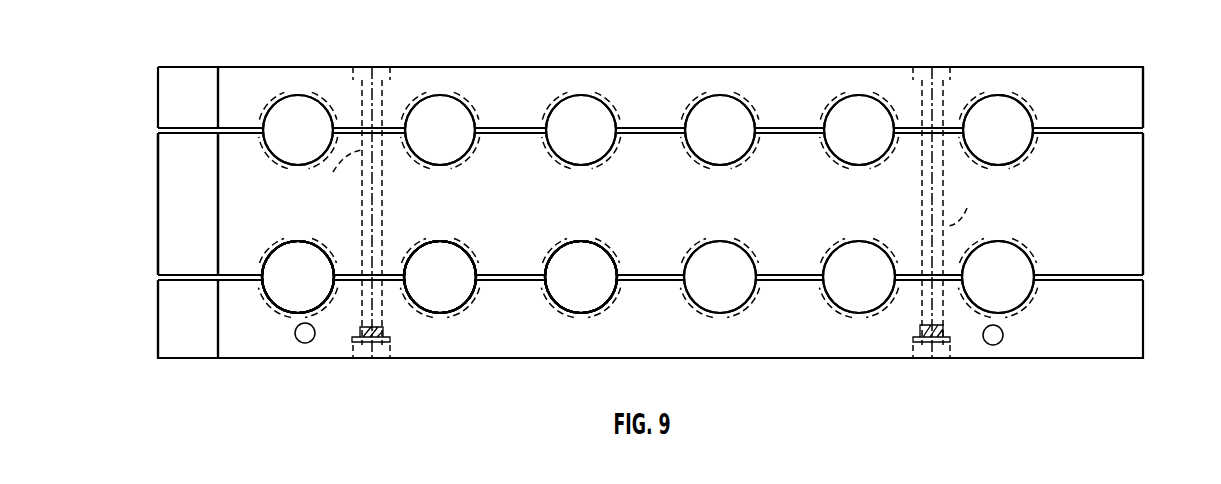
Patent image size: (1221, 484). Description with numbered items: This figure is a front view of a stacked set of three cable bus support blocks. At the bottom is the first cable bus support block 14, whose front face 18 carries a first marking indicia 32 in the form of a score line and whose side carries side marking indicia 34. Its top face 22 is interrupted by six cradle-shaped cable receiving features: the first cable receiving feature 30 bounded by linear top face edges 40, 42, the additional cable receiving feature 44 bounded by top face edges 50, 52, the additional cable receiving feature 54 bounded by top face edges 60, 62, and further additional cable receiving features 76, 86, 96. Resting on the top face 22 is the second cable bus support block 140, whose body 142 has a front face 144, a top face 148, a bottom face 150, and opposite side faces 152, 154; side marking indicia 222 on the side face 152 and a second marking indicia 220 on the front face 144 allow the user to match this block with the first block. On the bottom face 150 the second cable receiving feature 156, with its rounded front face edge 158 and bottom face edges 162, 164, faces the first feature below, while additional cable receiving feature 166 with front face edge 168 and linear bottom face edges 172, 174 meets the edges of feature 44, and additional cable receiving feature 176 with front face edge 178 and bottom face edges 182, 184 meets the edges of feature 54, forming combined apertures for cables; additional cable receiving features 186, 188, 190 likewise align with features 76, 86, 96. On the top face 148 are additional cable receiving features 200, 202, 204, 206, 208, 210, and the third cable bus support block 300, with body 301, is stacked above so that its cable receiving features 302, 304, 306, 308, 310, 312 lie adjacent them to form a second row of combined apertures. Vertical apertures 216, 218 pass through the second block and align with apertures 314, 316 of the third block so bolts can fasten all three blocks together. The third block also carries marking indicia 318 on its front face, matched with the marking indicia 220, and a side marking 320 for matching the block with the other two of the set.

The first cable bus support block 14 is at (1125, 318).
The front face 18 is at (630, 323).
The top face 22 is at (507, 280).
The first cable receiving feature 30 is at (298, 295).
The first marking indicia 32 is at (218, 322).
The side marking indicia 34 is at (158, 305).
The top face edge 40 is at (264, 290).
The top face edge 42 is at (334, 284).
The additional cable receiving feature 44 is at (452, 298).
The top face edge 50 is at (406, 292).
The top face edge 52 is at (480, 292).
The additional cable receiving feature 54 is at (595, 295).
The top face edge 60 is at (546, 290).
The top face edge 62 is at (614, 294).
The additional cable receiving feature 76 is at (715, 300).
The additional cable receiving feature 86 is at (865, 300).
The additional cable receiving feature 96 is at (1005, 300).
The second cable bus support block 140 is at (1113, 205).
The body 142 is at (1128, 242).
The front face 144 is at (645, 197).
The top face 148 is at (790, 134).
The bottom face 150 is at (507, 275).
The side face 152 is at (158, 168).
The side face 154 is at (1143, 165).
The second cable receiving feature 156 is at (287, 243).
The front face edge 158 is at (318, 246).
The bottom face edge 162 is at (263, 273).
The bottom face edge 164 is at (343, 272).
The additional cable receiving feature 166 is at (450, 246).
The front face edge 168 is at (443, 248).
The bottom face edge 172 is at (404, 272).
The bottom face edge 174 is at (477, 271).
The additional cable receiving feature 176 is at (573, 248).
The front face edge 178 is at (560, 245).
The bottom face edge 182 is at (544, 271).
The bottom face edge 184 is at (613, 270).
The additional cable receiving feature 186 is at (721, 250).
The additional cable receiving feature 188 is at (858, 250).
The additional cable receiving feature 190 is at (1005, 255).
The additional cable receiving feature 200 is at (281, 152).
The additional cable receiving feature 202 is at (423, 152).
The additional cable receiving feature 204 is at (564, 152).
The additional cable receiving feature 206 is at (703, 152).
The additional cable receiving feature 208 is at (842, 152).
The additional cable receiving feature 210 is at (981, 152).
The first vertical aperture 216 is at (335, 177).
The second vertical aperture 218 is at (965, 201).
The second marking indicia 220 is at (218, 232).
The side marking indicia 222 is at (158, 216).
The third cable bus support block 300 is at (1131, 81).
The body 301 is at (1131, 115).
The cable receiving feature 302 is at (288, 107).
The cable receiving feature 304 is at (435, 108).
The cable receiving feature 306 is at (583, 107).
The cable receiving feature 308 is at (723, 107).
The cable receiving feature 310 is at (862, 107).
The cable receiving feature 312 is at (1000, 107).
The aperture 314 is at (384, 100).
The aperture 316 is at (946, 100).
The marking indicia 318 is at (218, 98).
The side marking 320 is at (158, 104).